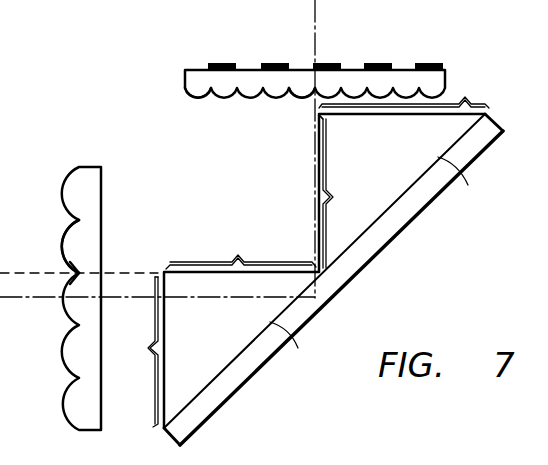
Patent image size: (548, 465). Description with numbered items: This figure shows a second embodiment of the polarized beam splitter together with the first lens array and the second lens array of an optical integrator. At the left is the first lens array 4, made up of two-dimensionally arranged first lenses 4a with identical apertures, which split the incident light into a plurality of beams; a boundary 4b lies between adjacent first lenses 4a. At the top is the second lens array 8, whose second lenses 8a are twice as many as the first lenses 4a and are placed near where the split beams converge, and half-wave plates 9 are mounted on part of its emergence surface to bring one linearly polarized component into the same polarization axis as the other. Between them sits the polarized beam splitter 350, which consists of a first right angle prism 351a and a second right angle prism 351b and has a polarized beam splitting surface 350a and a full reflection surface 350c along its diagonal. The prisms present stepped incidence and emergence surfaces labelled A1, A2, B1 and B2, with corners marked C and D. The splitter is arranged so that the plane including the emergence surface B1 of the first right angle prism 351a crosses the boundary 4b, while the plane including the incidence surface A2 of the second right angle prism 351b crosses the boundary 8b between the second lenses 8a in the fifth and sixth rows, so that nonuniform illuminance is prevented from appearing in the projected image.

The first lens array 4 is at (89, 166).
The first lens 4a is at (65, 238).
The boundary 4b is at (78, 273).
The second lens array 8 is at (447, 71).
The second lens 8a is at (198, 98).
The boundary 8b is at (312, 99).
The half-wave plate 9 is at (222, 62).
The polarized beam splitter 350 is at (400, 262).
The polarized beam splitting surface 350a is at (207, 385).
The full reflection surface 350c is at (236, 392).
The first right angle prism 351a is at (315, 345).
The second right angle prism 351b is at (484, 179).
The incidence surface A1 is at (141, 352).
The incidence surface A2 is at (342, 192).
The emergence surface B1 is at (241, 247).
The emergence surface B2 is at (406, 87).
The step corner C is at (157, 266).
The step corner D is at (318, 118).